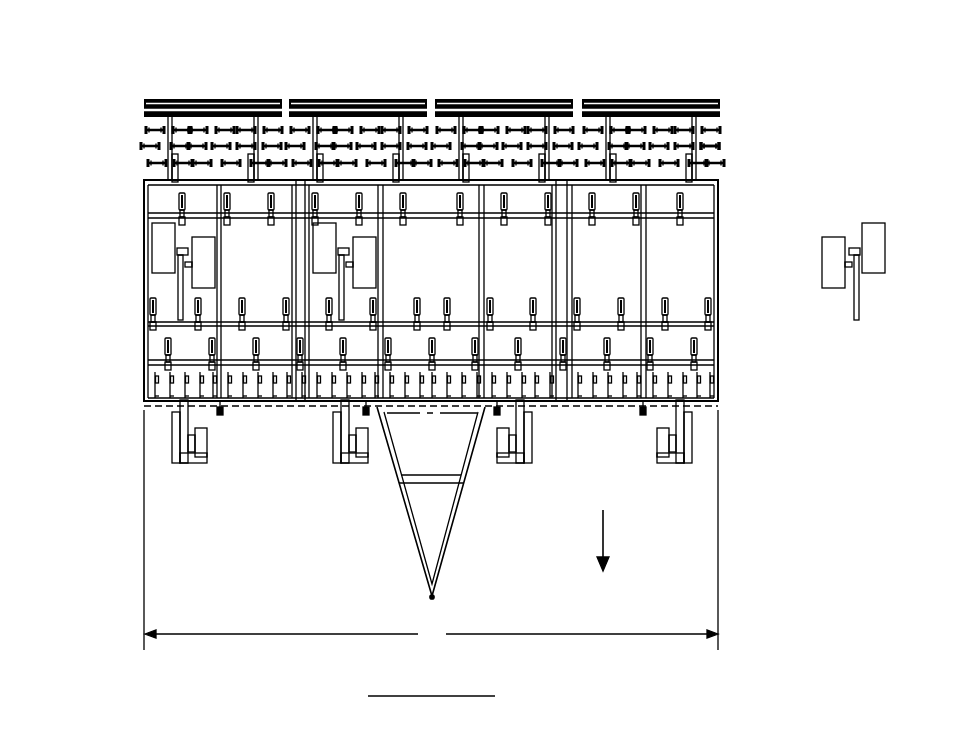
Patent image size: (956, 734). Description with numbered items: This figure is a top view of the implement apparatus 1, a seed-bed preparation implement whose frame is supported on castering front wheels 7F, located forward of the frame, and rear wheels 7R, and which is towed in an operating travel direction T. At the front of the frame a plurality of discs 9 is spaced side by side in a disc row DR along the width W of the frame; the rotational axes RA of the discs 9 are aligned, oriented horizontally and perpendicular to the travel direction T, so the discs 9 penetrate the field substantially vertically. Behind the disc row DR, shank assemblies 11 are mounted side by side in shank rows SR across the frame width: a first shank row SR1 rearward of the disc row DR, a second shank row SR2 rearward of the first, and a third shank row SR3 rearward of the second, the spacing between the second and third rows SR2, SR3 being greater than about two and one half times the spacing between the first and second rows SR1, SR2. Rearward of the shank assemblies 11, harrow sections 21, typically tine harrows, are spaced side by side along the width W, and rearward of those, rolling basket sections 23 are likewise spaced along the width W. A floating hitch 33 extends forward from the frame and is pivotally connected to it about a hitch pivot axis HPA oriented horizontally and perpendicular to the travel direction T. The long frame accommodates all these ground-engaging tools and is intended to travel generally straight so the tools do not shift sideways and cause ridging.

The implement apparatus 1 is at (90, 90).
The shank assemblies 11 is at (179, 206).
The rear wheels 7R is at (172, 273).
The rotational axes of the discs RA is at (148, 384).
The rolling basket sections 23 is at (701, 100).
The harrow sections 21 is at (719, 147).
The third shank row SR3 is at (718, 217).
The second shank row SR2 is at (718, 324).
The shank rows SR is at (527, 356).
The first shank row SR1 is at (718, 363).
The disc row DR is at (718, 403).
The discs 9 is at (587, 404).
The castering front wheels 7F is at (333, 442).
The hitch pivot axis HPA is at (417, 413).
The floating hitch 33 is at (412, 540).
The operating travel direction T is at (603, 528).
The width of the implement frame W is at (431, 530).